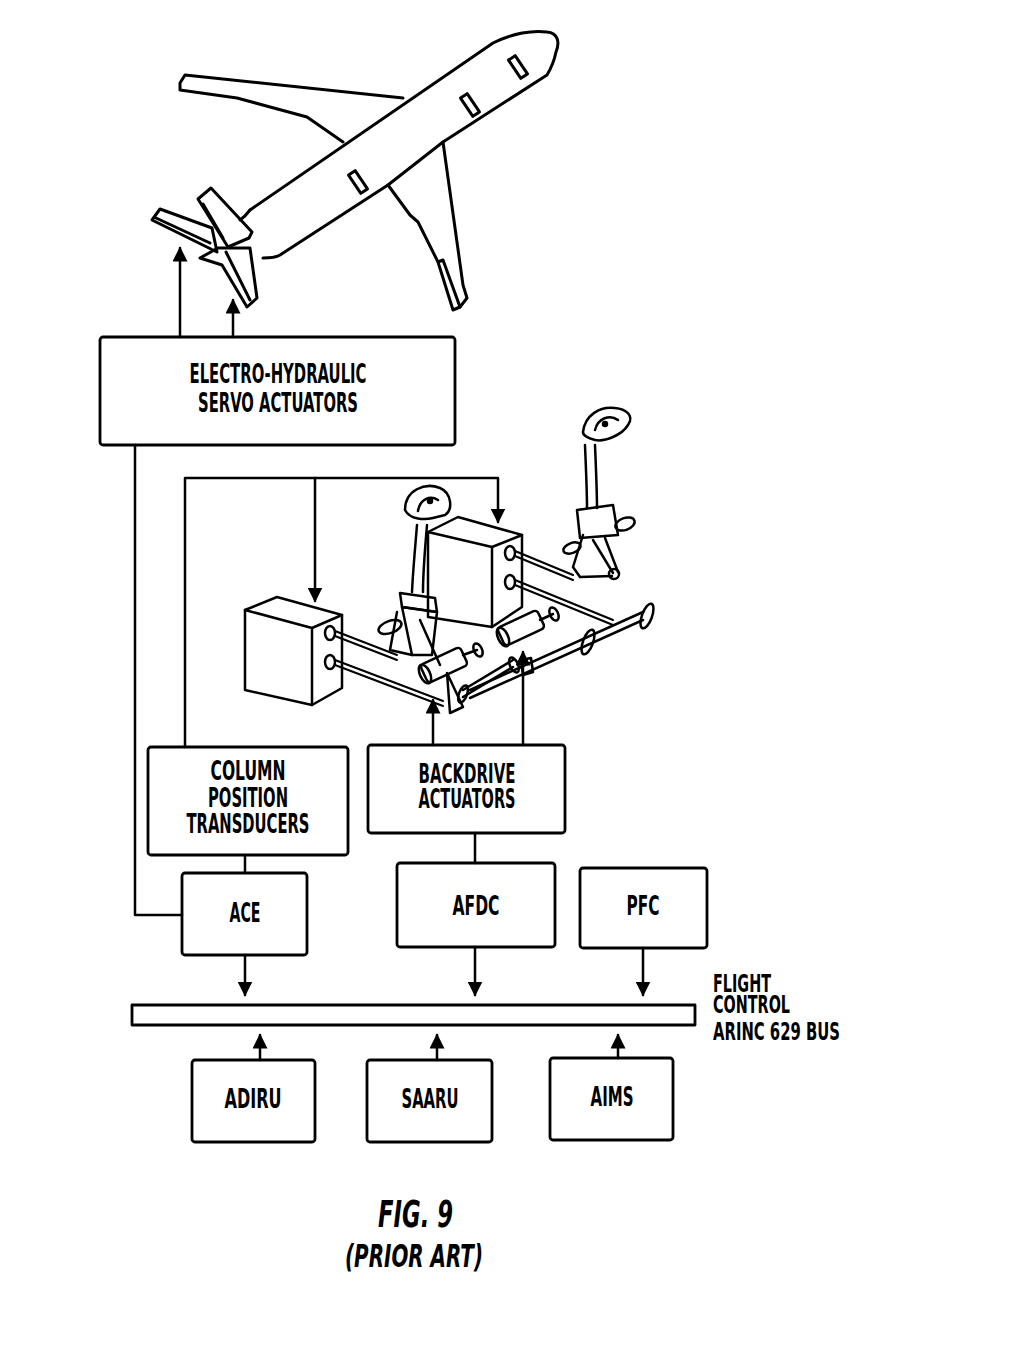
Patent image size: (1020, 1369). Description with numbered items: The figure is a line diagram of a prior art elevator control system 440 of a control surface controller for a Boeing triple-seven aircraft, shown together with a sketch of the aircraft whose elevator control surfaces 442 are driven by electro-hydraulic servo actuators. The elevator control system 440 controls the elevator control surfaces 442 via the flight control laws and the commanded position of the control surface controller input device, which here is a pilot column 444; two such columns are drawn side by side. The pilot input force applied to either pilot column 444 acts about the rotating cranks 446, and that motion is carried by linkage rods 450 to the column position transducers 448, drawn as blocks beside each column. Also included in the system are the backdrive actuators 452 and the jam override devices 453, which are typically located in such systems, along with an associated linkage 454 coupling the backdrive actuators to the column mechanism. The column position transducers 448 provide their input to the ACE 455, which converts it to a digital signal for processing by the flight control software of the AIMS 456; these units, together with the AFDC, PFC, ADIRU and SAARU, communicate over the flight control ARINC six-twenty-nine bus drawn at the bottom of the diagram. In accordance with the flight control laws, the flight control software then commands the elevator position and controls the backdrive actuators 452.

The elevator control system 440 is at (656, 352).
The elevator control surfaces 442 is at (172, 235).
The pilot column 444 is at (415, 503).
The rotating cranks 446 is at (393, 613).
The column position transducers 448 is at (267, 630).
The transducer linkage rods 450 is at (593, 585).
The backdrive actuators 452 is at (442, 670).
The jam override devices 453 is at (555, 653).
The backdrive actuator linkage 454 is at (523, 667).
The ACE 455 is at (183, 957).
The AIMS 456 is at (637, 1140).